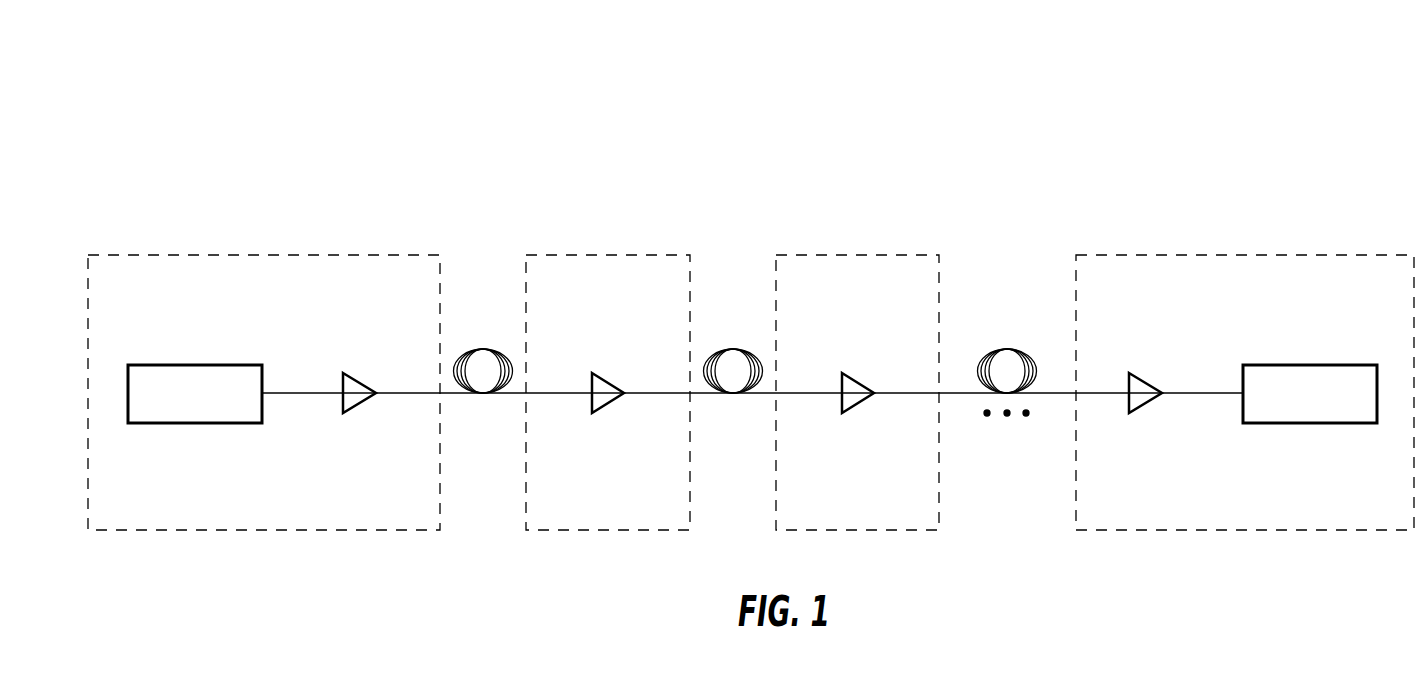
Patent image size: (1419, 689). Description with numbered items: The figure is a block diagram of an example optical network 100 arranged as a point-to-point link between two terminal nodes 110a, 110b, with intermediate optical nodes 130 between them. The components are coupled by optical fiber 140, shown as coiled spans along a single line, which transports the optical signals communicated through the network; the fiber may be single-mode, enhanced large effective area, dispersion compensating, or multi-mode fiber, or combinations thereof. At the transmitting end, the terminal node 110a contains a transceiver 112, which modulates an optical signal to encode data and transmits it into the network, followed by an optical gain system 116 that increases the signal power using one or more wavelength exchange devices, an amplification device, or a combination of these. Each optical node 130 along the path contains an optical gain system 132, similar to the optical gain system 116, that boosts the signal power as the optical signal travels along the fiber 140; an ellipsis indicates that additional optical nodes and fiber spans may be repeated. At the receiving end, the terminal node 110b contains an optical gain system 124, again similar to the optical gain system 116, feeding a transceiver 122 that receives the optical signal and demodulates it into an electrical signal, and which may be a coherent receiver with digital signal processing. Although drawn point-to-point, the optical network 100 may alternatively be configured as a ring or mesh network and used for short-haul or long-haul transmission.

The optical network 100 is at (1338, 113).
The terminal node 110a is at (224, 255).
The terminal node 110b is at (1216, 255).
The transceiver 112 is at (165, 364).
The optical gain system 116 is at (364, 372).
The transceiver 122 is at (1338, 364).
The optical gain system 124 is at (1150, 372).
The optical node 130 is at (606, 255).
The optical gain system 132 is at (600, 373).
The optical fiber 140 is at (484, 349).